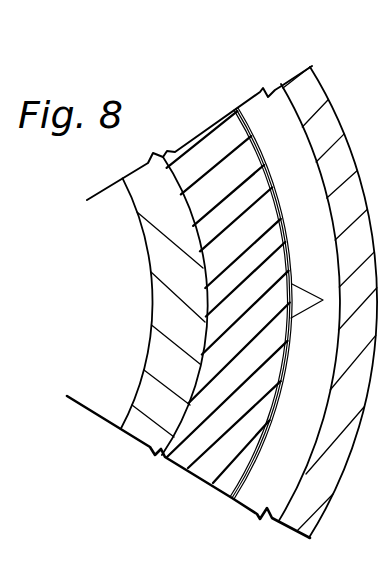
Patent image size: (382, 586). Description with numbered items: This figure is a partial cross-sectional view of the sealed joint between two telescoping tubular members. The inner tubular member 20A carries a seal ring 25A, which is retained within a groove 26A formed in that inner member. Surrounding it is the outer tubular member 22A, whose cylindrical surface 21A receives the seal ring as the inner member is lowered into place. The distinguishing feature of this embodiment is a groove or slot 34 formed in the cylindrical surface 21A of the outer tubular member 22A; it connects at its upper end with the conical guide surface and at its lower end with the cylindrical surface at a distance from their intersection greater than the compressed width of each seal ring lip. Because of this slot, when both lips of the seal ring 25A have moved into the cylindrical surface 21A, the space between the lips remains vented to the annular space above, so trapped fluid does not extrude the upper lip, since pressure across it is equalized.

The inner tubular member 20A is at (126, 437).
The cylindrical surface 21A is at (252, 147).
The outer tubular member 22A is at (287, 76).
The seal ring 25A is at (211, 489).
The groove 26A is at (187, 434).
The groove or slot 34 is at (305, 303).